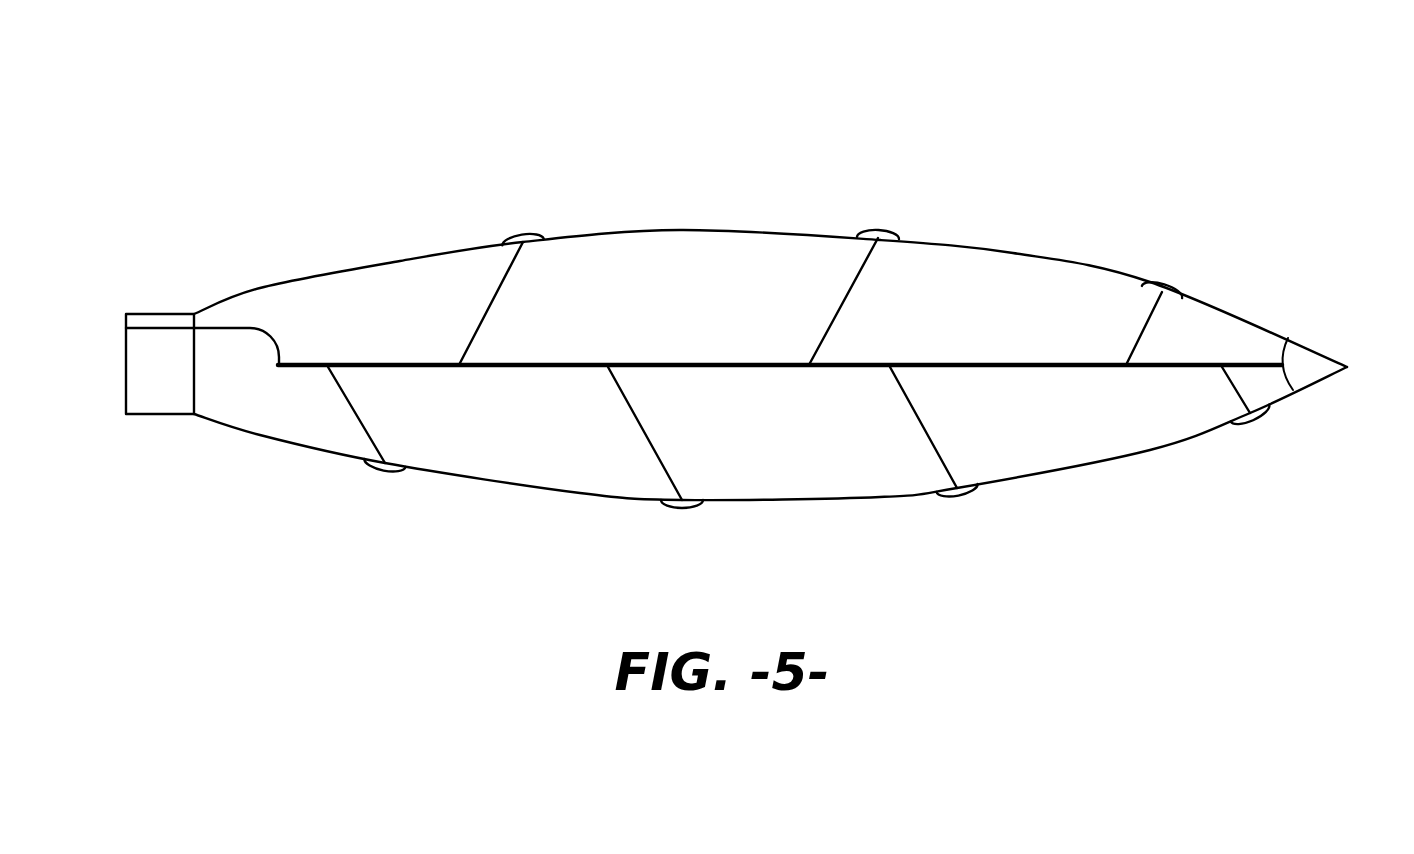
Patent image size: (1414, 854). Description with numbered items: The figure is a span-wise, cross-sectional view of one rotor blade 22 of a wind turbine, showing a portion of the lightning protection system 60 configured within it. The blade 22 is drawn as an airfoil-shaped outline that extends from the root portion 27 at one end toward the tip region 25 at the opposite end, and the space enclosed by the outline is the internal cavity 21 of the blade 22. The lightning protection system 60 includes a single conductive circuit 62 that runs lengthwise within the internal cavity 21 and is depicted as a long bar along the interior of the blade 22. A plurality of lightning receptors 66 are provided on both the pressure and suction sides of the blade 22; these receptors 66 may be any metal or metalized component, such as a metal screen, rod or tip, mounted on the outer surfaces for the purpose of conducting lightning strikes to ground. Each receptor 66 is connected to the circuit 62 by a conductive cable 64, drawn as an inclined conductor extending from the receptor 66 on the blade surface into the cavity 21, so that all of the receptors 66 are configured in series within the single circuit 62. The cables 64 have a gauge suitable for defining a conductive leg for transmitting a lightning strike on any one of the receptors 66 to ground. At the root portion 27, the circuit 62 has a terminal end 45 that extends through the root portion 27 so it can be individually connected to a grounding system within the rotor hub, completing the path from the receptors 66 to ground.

The lightning protection system 60 is at (437, 138).
The rotor blade 22 is at (1013, 250).
The internal cavity 21 is at (910, 321).
The tail end 25 is at (1347, 367).
The root portion 27 is at (153, 312).
The terminal end 45 is at (165, 331).
The conductive circuit 62 is at (665, 360).
The conductive cable 64 is at (570, 367).
The lightning receptor 66 is at (882, 230).